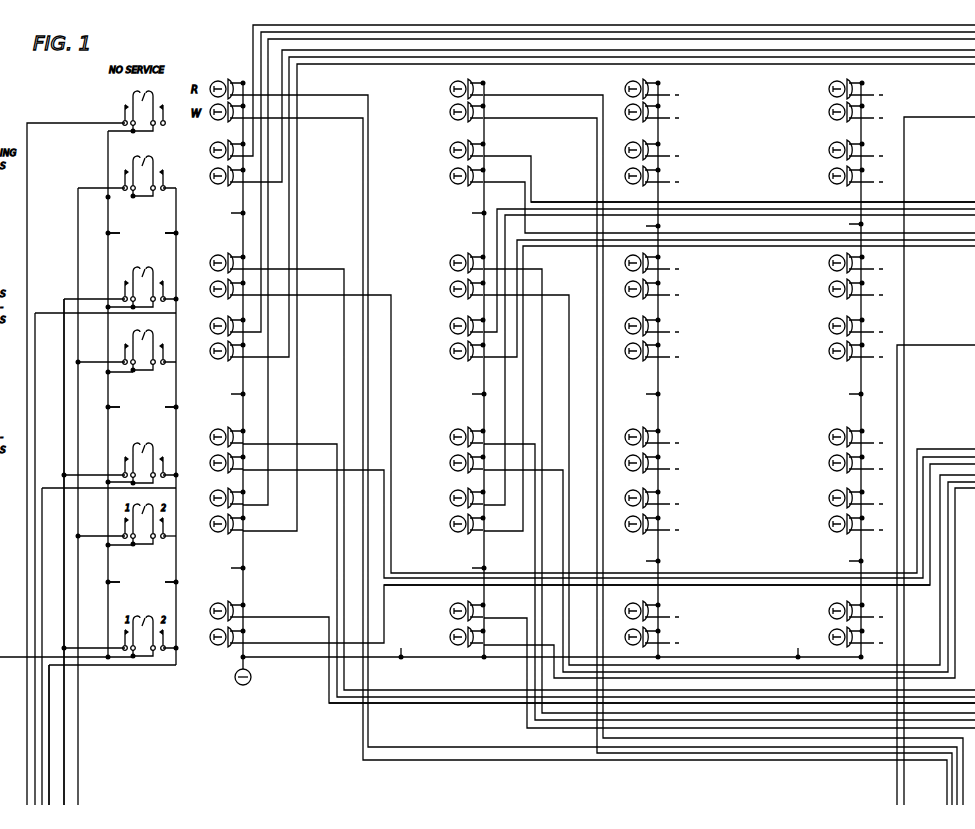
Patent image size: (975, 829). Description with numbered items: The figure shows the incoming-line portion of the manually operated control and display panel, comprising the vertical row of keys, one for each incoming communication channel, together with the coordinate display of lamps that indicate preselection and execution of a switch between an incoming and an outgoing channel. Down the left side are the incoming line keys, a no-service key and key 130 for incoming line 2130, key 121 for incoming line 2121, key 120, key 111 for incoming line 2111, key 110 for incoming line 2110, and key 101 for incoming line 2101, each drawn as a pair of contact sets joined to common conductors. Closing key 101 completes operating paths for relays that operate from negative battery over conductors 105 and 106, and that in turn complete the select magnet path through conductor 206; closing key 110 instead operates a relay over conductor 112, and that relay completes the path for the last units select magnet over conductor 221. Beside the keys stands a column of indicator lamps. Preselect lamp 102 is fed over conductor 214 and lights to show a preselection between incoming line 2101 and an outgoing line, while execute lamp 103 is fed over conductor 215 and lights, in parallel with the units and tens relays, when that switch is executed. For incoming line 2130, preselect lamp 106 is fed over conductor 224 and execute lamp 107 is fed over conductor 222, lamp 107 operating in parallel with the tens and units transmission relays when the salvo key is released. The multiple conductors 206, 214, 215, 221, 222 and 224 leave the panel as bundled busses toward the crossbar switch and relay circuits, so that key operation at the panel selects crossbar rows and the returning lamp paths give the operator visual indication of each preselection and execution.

The incoming line key 101 is at (178, 592).
The preselect lamp 102 is at (209, 640).
The execute lamp 103 is at (209, 613).
The conductor 105 is at (64, 744).
The conductor / preselect lamp 106 is at (49, 764).
The execute lamp 107 is at (449, 150).
The incoming line key 110 is at (167, 497).
The incoming line key 111 is at (178, 422).
The conductor 112 is at (78, 597).
The incoming line key 120 is at (144, 344).
The incoming line key 121 is at (175, 241).
The incoming line key 130 is at (160, 142).
The conductor 206 is at (952, 344).
The conductor 214 is at (769, 587).
The conductor 215 is at (439, 704).
The conductor 221 is at (957, 116).
The conductor 222 is at (760, 201).
The conductor 224 is at (759, 248).
The incoming line 2101 is at (159, 587).
The incoming line 2110 is at (181, 514).
The incoming line 2111 is at (159, 412).
The incoming line 2121 is at (160, 238).
The incoming line 2130 is at (178, 181).